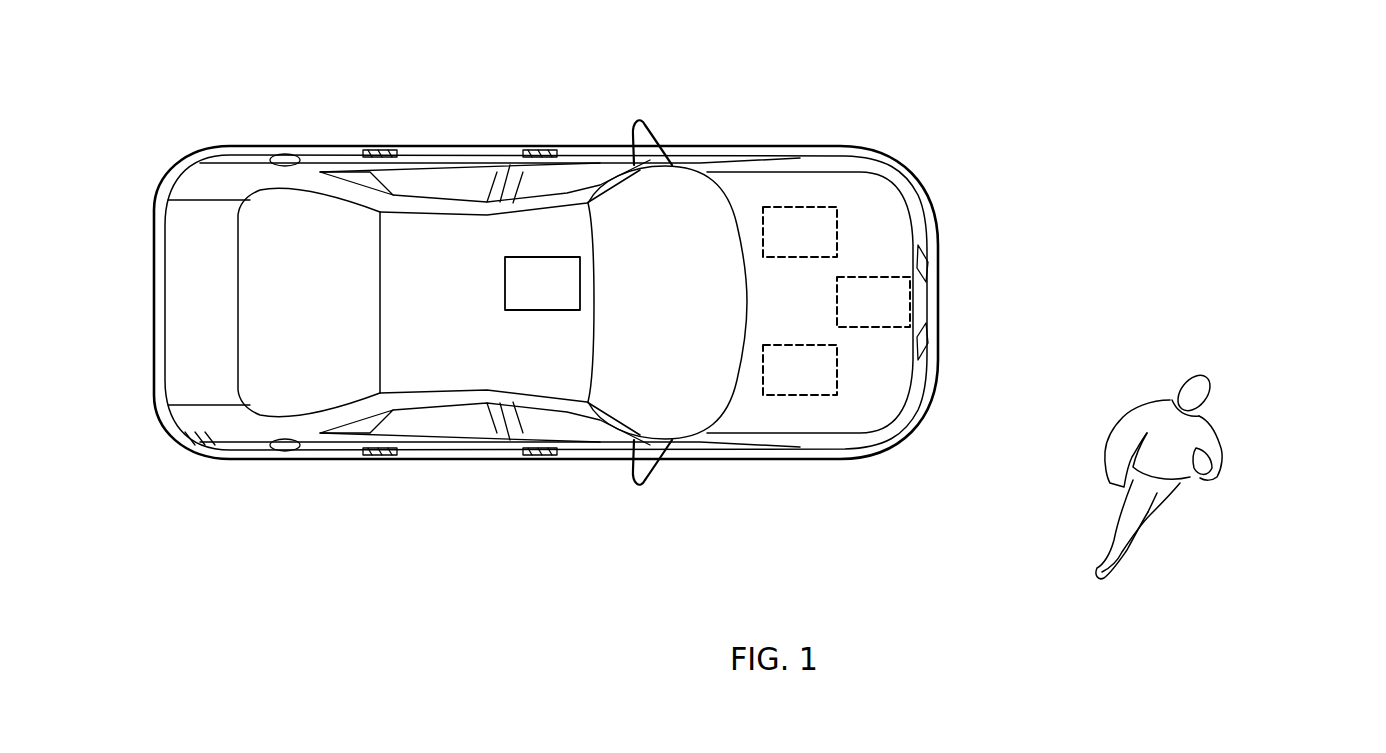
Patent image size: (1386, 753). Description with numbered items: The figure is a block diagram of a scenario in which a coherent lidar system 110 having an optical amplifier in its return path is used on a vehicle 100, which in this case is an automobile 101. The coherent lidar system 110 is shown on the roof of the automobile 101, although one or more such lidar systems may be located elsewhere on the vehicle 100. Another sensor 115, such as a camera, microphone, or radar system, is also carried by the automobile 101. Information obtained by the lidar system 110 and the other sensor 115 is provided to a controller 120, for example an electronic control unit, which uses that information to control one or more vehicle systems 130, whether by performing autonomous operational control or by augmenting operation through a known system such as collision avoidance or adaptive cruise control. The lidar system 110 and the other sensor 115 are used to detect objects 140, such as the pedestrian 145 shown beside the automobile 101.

The vehicle 100 is at (313, 146).
The automobile 101 is at (546, 302).
The coherent lidar system 110 is at (521, 298).
The sensor 115 is at (851, 317).
The controller 120 is at (778, 247).
The vehicle systems 130 is at (778, 385).
The objects 140 is at (1240, 379).
The pedestrian 145 is at (1217, 463).